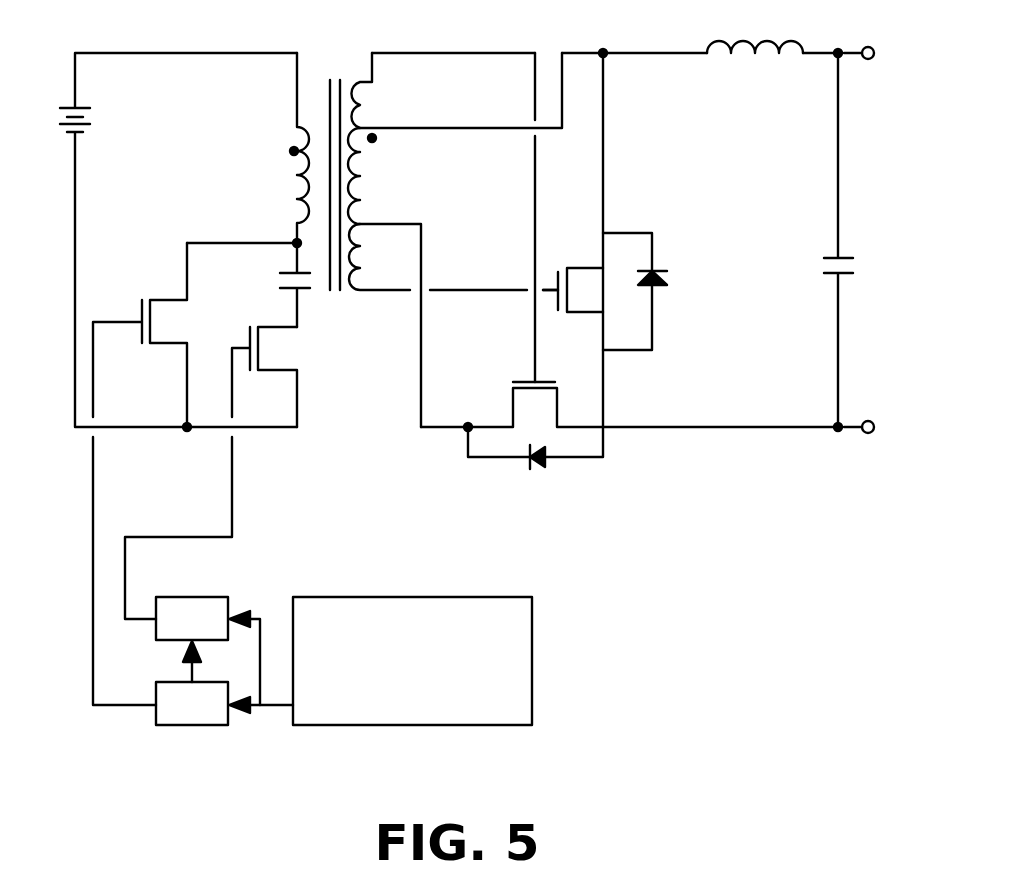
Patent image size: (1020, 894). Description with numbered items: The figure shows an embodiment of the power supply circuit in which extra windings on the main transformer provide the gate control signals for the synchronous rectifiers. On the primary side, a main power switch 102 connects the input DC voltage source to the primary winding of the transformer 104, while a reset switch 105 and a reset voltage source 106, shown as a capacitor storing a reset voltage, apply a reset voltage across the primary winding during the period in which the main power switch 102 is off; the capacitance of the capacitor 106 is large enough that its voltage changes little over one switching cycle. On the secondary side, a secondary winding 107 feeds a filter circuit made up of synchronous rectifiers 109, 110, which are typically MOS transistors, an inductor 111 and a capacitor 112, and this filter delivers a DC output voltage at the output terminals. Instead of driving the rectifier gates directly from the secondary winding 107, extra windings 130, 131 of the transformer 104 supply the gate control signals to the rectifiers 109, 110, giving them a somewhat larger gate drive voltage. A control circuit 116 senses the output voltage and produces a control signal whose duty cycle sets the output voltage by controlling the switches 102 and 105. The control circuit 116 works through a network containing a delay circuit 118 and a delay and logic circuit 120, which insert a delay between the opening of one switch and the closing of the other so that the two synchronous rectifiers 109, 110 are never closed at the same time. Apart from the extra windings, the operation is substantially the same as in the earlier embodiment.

The main power switch 102 is at (172, 300).
The transformer 104 is at (335, 72).
The reset switch 105 is at (295, 357).
The reset voltage source 106 is at (290, 272).
The secondary winding 107 is at (370, 193).
The synchronous rectifier 109 is at (535, 380).
The synchronous rectifier 110 is at (587, 267).
The inductor 111 is at (765, 53).
The capacitor 112 is at (843, 275).
The control circuit 116 is at (533, 662).
The delay circuit 118 is at (192, 725).
The delay and logic circuit 120 is at (198, 597).
The extra winding 130 is at (377, 112).
The extra winding 131 is at (348, 297).